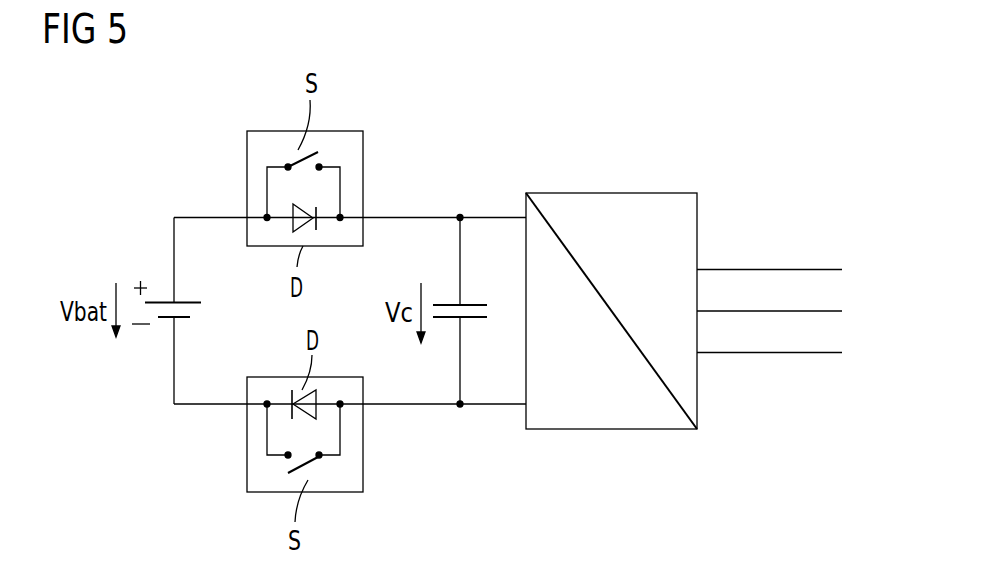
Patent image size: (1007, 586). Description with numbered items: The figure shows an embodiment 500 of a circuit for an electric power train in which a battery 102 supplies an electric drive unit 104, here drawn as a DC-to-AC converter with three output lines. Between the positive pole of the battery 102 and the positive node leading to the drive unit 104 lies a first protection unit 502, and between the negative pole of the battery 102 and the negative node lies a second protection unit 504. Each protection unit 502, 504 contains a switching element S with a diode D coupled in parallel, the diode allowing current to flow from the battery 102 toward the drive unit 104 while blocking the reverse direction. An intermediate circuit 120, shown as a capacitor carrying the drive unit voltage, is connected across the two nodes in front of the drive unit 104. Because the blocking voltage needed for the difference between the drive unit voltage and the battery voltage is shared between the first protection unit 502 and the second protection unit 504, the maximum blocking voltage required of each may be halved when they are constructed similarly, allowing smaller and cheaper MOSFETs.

The embodiment 500 is at (125, 435).
The first protection unit 502 is at (363, 144).
The second protection unit 504 is at (363, 470).
The battery 102 is at (167, 332).
The intermediate circuit 120 is at (443, 332).
The electric drive unit 104 is at (855, 459).